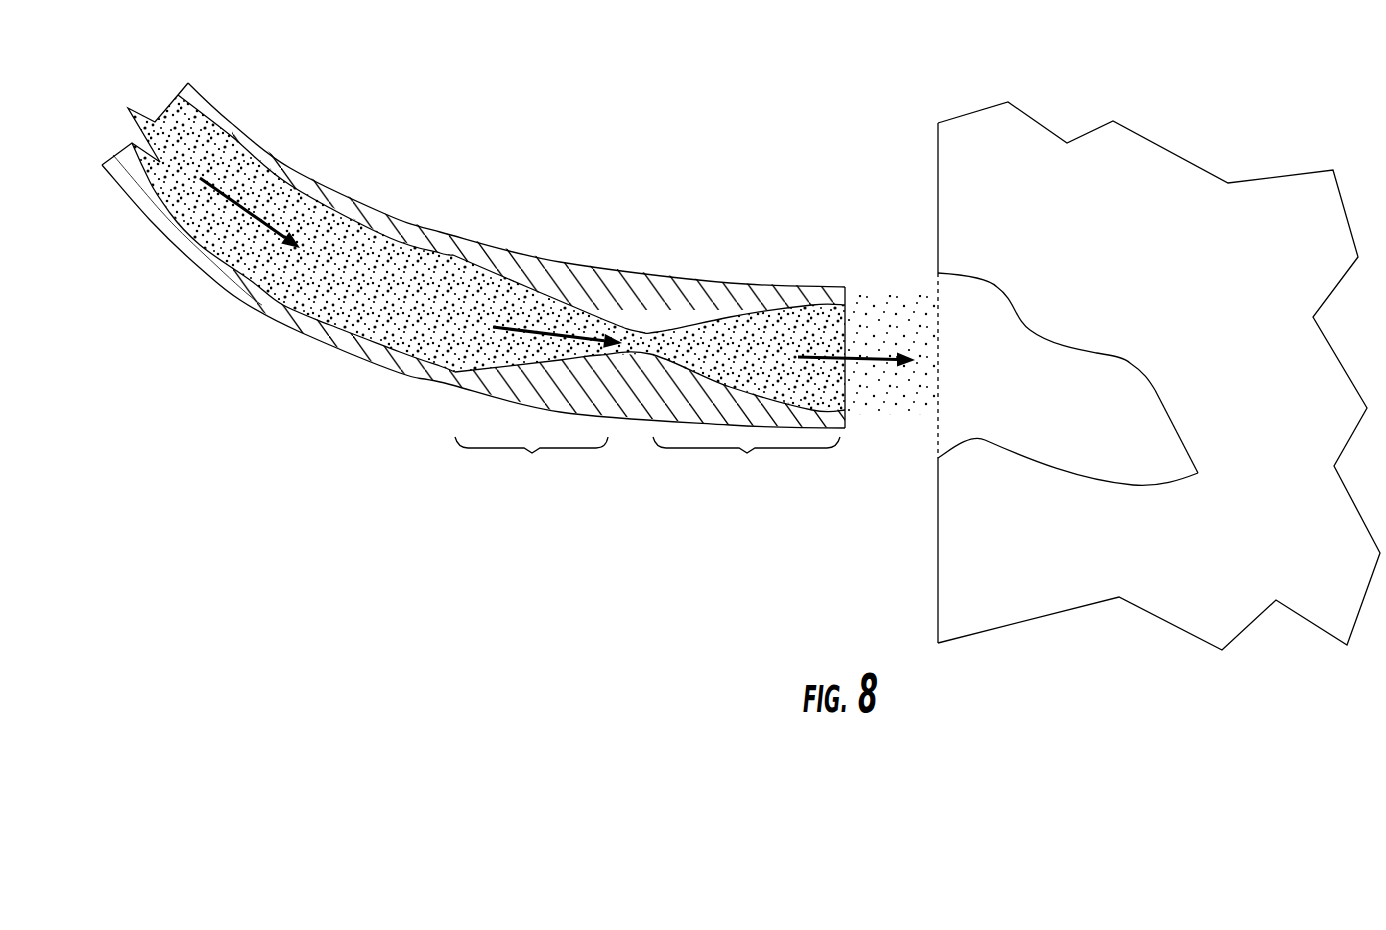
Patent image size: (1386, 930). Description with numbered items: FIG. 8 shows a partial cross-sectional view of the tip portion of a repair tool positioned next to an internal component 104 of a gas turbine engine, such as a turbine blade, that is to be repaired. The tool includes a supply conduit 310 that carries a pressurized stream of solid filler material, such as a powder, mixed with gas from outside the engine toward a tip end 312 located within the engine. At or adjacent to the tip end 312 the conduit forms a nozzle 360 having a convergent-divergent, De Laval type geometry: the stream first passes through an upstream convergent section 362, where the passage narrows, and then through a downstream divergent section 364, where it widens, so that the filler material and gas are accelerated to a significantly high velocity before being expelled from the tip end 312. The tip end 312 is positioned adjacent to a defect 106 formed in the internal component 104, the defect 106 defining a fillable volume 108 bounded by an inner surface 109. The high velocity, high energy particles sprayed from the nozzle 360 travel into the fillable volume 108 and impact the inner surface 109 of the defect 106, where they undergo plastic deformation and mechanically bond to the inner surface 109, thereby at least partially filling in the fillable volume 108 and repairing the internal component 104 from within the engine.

The supply conduit 310 is at (224, 104).
The tip end 312 is at (848, 287).
The nozzle 360 is at (633, 301).
The convergent section 362 is at (531, 465).
The divergent section 364 is at (749, 399).
The internal component 104 is at (1173, 141).
The defect 106 is at (1009, 283).
The fillable volume 108 is at (1114, 424).
The inner surface 109 is at (1153, 377).